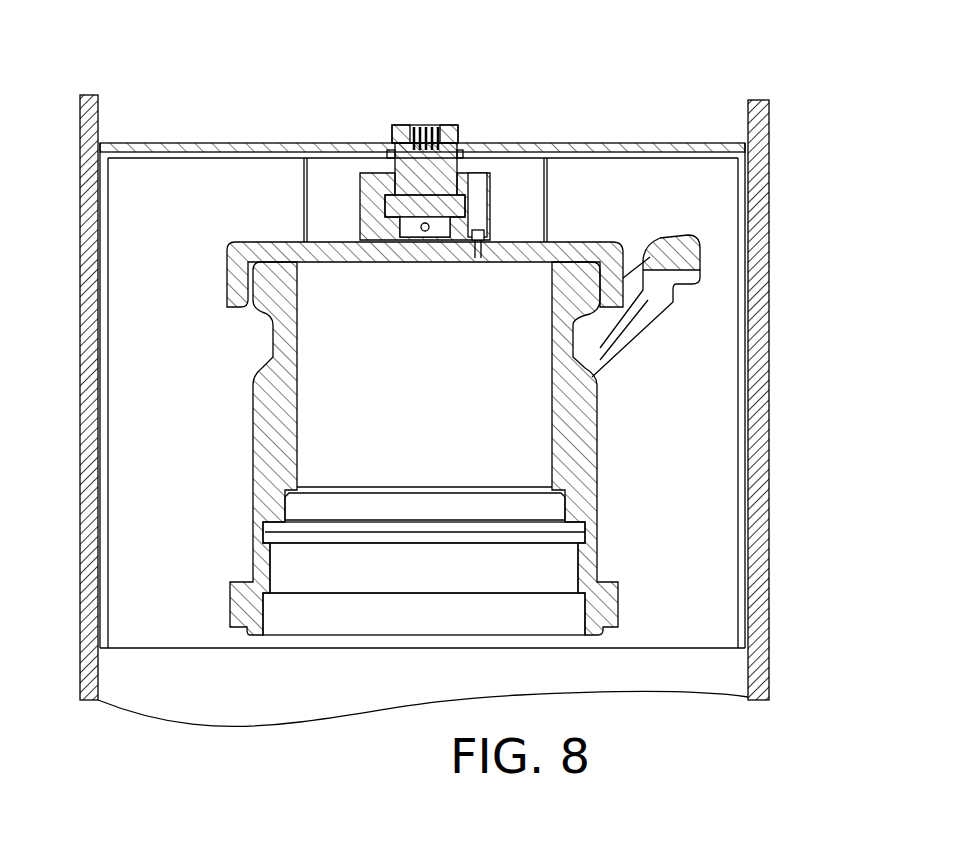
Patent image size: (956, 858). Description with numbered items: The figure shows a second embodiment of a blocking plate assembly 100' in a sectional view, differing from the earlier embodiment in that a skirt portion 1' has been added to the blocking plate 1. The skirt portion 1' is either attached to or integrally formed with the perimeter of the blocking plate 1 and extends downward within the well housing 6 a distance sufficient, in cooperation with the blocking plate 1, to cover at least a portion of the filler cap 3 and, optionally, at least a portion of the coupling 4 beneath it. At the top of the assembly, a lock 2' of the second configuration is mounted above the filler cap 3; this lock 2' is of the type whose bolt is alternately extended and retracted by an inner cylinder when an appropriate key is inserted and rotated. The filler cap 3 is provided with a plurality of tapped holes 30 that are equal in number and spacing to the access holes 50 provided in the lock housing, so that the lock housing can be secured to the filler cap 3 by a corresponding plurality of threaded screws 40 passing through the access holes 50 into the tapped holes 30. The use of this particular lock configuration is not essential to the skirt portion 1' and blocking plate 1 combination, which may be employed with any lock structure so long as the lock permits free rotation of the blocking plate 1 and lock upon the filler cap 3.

The blocking plate assembly 100' is at (212, 53).
The blocking plate 1 is at (422, 89).
The skirt portion 1' is at (423, 434).
The lock 2' is at (450, 129).
The filler cap 3 is at (255, 243).
The coupling 4 is at (253, 405).
The well housing 6 is at (769, 427).
The tapped holes 30 is at (474, 250).
The threaded screws 40 is at (471, 243).
The access holes 50 is at (473, 172).